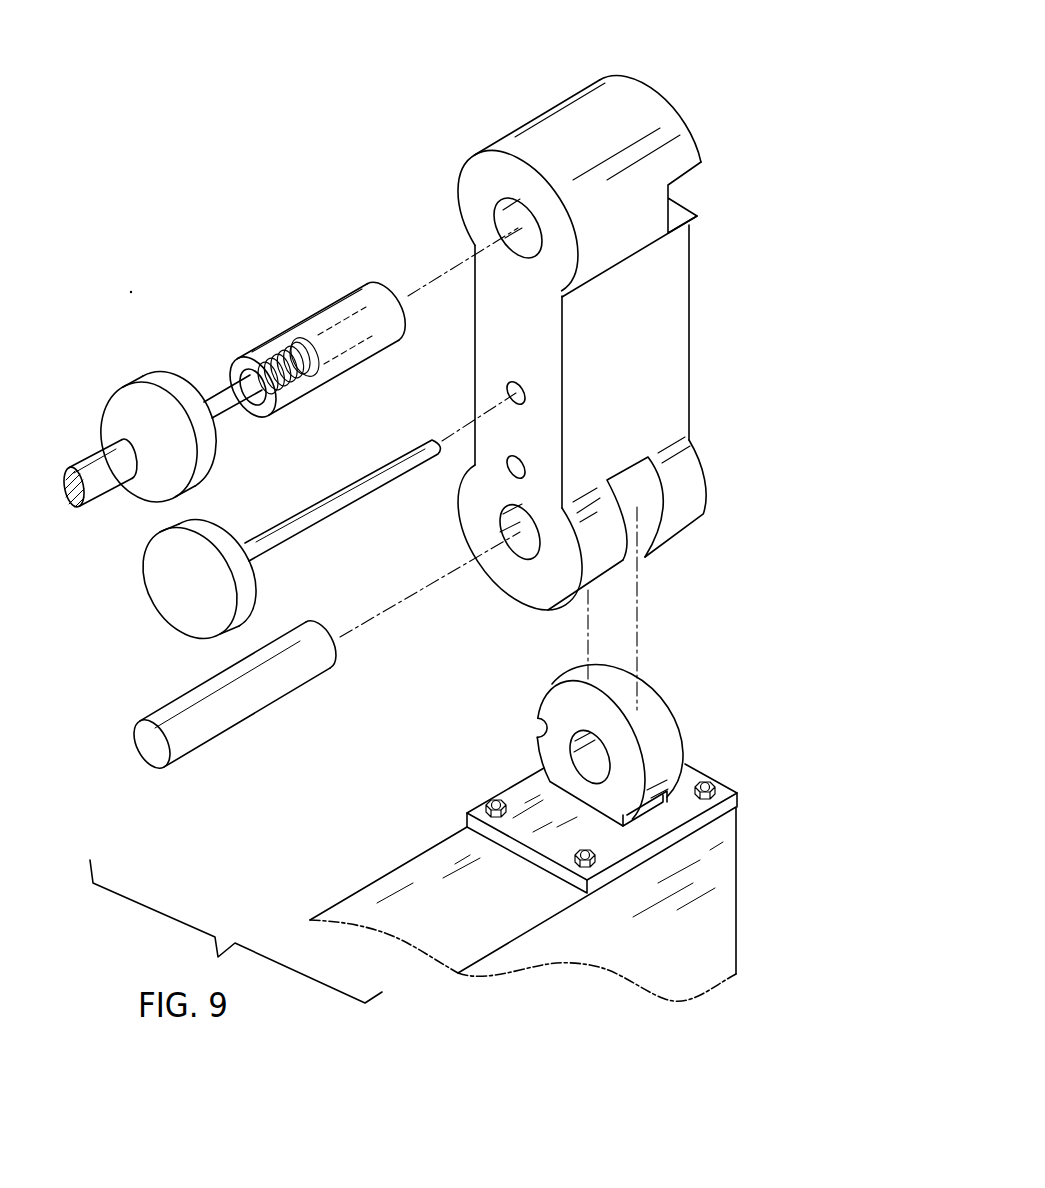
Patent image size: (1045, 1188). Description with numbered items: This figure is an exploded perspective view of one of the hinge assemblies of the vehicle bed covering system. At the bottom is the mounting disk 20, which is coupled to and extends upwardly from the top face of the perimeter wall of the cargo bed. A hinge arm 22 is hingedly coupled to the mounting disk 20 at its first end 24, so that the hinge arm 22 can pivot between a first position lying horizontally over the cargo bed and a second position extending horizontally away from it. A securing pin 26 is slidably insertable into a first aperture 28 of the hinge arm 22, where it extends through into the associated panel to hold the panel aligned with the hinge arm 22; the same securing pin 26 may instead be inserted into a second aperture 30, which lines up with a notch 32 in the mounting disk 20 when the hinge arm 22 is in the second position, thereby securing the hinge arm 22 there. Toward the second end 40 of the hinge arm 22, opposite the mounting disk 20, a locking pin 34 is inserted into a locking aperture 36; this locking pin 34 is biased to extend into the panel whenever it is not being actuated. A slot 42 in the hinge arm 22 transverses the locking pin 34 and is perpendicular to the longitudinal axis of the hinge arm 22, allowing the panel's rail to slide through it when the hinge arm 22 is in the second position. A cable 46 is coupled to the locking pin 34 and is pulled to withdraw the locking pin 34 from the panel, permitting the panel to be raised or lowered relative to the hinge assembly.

The mounting disk 20 is at (655, 725).
The hinge arm 22 is at (678, 311).
The first end 24 is at (530, 603).
The securing pin 26 is at (177, 608).
The first aperture 28 is at (507, 394).
The second aperture 30 is at (508, 468).
The notch 32 is at (540, 730).
The locking pin 34 is at (143, 407).
The locking aperture 36 is at (497, 223).
The second end 40 is at (648, 80).
The slot 42 is at (672, 192).
The cable 46 is at (93, 457).